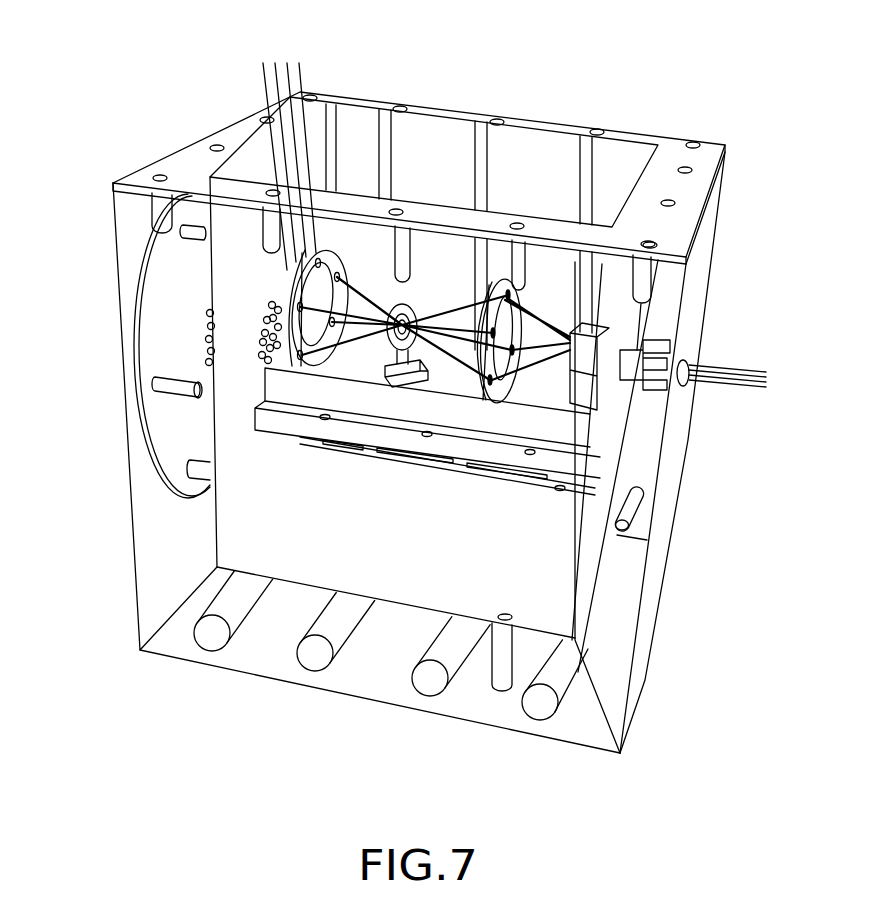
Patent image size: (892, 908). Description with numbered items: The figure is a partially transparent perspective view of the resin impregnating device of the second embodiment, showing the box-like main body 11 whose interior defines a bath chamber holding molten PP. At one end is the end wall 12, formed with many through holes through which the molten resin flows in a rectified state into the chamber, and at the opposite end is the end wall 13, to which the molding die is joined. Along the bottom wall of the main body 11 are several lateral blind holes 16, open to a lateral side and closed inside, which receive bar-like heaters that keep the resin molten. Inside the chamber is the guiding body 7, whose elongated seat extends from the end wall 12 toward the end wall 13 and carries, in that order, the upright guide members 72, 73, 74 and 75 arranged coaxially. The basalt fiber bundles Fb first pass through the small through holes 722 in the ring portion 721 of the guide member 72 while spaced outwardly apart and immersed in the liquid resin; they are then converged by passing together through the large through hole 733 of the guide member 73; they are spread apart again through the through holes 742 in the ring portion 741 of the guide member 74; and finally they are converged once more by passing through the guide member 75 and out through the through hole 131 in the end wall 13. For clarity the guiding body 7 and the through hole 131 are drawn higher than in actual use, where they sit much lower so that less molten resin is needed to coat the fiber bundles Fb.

The main body 11 is at (668, 143).
The end wall 12 is at (130, 515).
The end wall 13 is at (658, 555).
The lateral blind holes 16 is at (212, 632).
The guiding body 7 is at (461, 480).
The guide member 72 is at (285, 316).
The ring portion 721 is at (293, 290).
The through holes 722 is at (320, 246).
The guide member 73 is at (398, 308).
The through hole 733 is at (420, 380).
The guide member 74 is at (488, 282).
The ring portion 741 is at (480, 288).
The through holes 742 is at (515, 290).
The guide member 75 is at (587, 343).
The through hole 131 is at (636, 367).
The basalt fiber bundles Fb is at (263, 78).